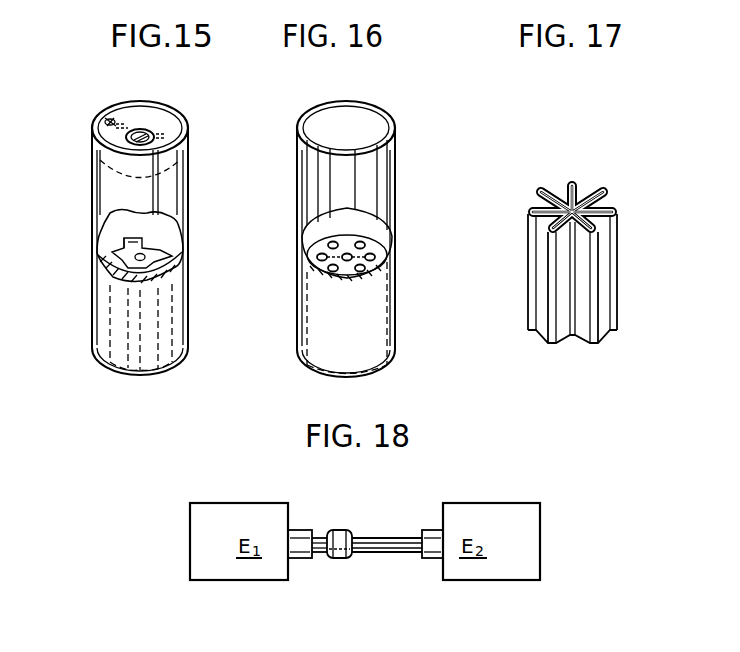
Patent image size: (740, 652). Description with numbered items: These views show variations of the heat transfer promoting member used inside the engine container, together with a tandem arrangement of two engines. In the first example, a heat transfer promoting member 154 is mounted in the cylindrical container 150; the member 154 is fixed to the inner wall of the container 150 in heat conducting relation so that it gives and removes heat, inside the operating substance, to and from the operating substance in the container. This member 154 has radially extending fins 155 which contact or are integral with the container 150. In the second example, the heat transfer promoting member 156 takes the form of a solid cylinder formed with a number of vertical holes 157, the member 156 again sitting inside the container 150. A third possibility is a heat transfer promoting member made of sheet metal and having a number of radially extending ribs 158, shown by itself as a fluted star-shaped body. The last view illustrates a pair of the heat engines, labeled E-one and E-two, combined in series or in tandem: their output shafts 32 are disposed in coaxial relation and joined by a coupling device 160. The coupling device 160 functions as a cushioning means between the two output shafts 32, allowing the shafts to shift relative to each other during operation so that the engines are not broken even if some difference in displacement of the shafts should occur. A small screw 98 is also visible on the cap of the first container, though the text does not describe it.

In FIG. 15, the screw 98 is at (110, 118).
In FIG. 15, the cylindrical container 150 is at (174, 178).
In FIG. 16, the cylindrical container 150 is at (384, 176).
In FIG. 15, the heat transfer promoting member 154 is at (118, 282).
In FIG. 15, the radially extending fins 155 is at (176, 253).
In FIG. 16, the heat transfer promoting member 156 is at (382, 280).
In FIG. 16, the vertical holes 157 is at (392, 242).
In FIG. 17, the radially extending ribs 158 is at (532, 240).
In FIG. 18, the output shafts 32 is at (320, 533).
In FIG. 18, the coupling device 160 is at (338, 562).